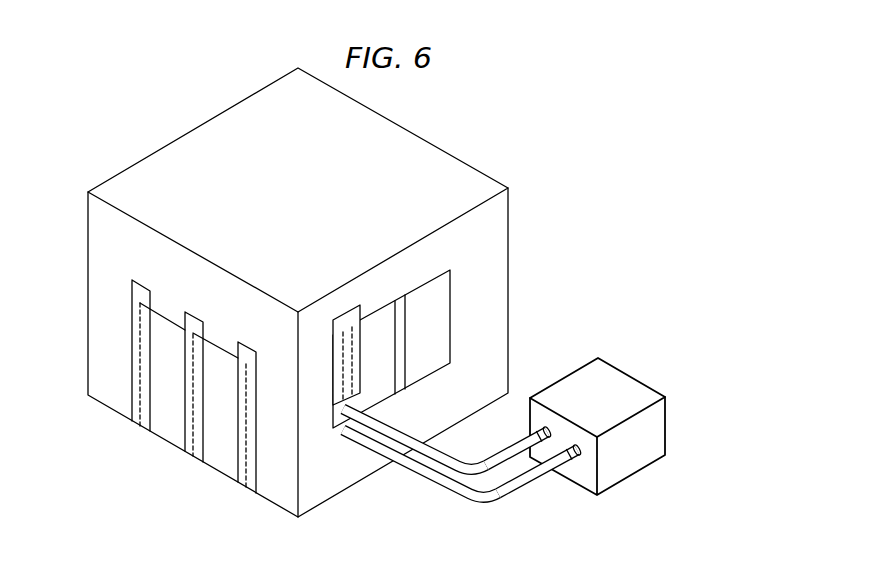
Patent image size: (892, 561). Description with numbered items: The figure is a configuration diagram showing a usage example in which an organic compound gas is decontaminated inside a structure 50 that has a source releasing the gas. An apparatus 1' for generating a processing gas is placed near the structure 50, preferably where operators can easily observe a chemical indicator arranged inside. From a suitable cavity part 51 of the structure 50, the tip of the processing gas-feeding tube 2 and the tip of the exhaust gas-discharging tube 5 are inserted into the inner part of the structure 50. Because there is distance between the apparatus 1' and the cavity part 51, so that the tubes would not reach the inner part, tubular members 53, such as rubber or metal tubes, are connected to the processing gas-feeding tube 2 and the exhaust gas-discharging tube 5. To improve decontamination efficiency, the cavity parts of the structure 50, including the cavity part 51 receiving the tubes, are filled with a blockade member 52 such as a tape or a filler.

The structure 50 is at (442, 130).
The cavity part 51 is at (363, 368).
The blockade member 52 is at (348, 315).
The tubular member 53 is at (480, 494).
The apparatus for generating a processing gas 1' is at (597, 393).
The exhaust gas-discharging tube 5 is at (530, 436).
The processing gas-feeding tube 2 is at (572, 462).